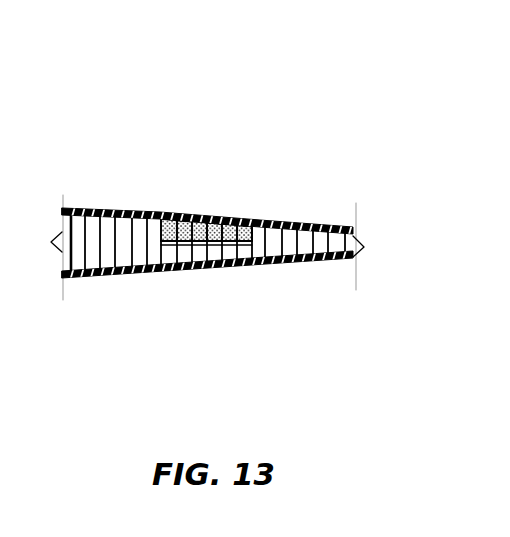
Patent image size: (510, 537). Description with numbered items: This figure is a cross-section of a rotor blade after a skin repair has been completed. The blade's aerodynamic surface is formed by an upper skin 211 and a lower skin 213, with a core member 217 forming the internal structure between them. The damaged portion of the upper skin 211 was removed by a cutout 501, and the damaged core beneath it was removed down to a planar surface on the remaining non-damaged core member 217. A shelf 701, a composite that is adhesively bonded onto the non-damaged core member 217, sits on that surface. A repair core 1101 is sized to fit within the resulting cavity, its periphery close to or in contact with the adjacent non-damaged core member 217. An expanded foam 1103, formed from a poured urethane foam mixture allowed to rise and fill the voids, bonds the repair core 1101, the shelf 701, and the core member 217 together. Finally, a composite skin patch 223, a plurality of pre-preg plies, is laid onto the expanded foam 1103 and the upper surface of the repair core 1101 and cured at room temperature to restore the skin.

The upper skin 211 is at (132, 208).
The lower skin 213 is at (92, 278).
The core member 217 is at (266, 232).
The composite skin patch 223 is at (188, 208).
The cutout 501 is at (167, 208).
The shelf 701 is at (183, 244).
The repair core 1101 is at (248, 210).
The expanded foam 1103 is at (221, 210).